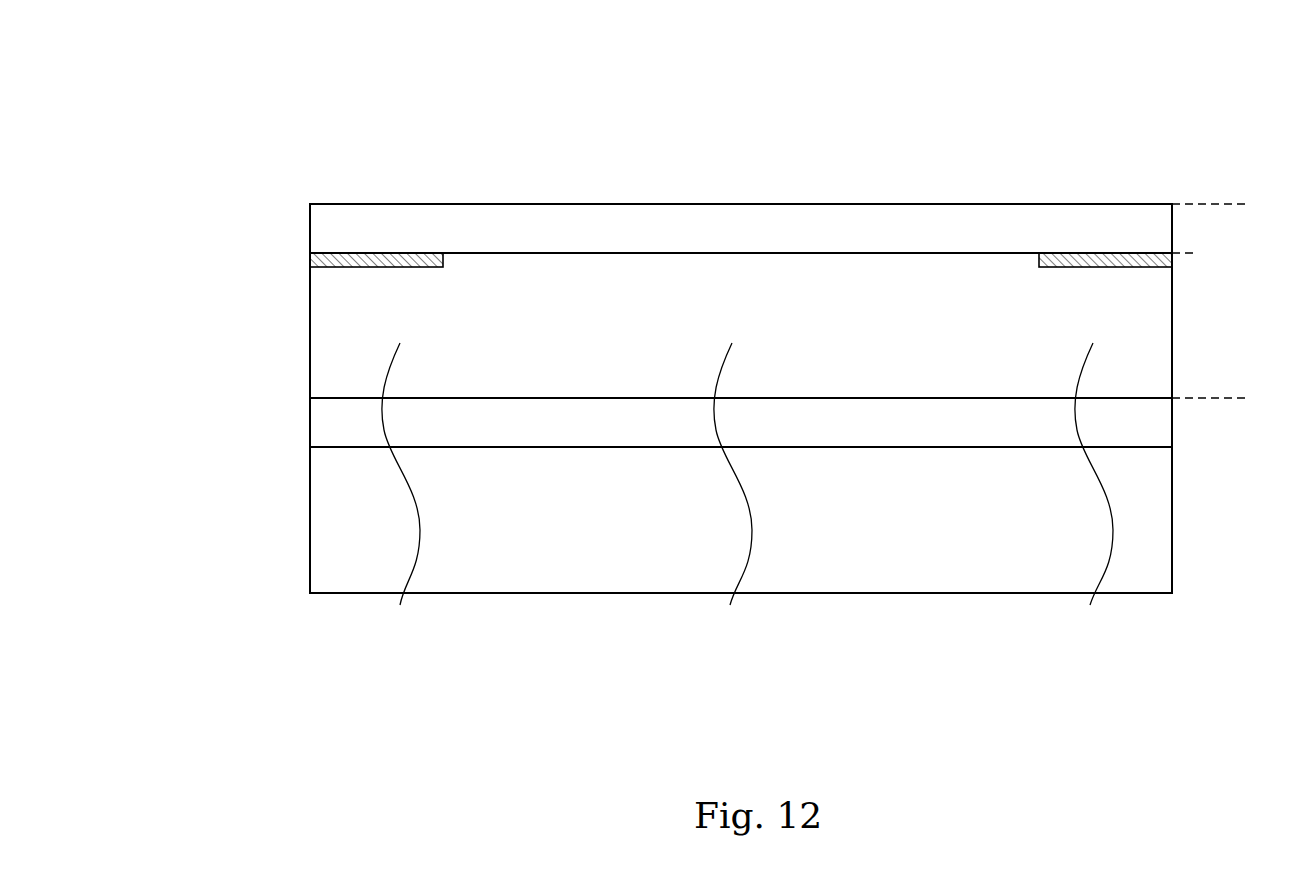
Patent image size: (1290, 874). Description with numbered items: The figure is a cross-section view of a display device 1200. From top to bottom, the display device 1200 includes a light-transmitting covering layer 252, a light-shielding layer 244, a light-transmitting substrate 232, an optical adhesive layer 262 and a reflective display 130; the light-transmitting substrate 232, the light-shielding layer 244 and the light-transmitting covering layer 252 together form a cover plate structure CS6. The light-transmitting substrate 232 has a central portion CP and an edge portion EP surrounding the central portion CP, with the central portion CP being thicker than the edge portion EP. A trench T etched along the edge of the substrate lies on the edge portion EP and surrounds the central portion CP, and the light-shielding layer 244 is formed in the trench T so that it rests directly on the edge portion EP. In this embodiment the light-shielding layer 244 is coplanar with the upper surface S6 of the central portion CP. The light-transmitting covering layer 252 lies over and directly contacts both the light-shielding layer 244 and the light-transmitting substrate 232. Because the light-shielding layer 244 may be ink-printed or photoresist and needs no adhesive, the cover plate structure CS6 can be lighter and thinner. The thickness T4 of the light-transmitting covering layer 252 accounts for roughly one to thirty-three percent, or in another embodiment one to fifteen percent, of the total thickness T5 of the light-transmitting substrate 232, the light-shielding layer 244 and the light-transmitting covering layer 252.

The display device 1200 is at (247, 52).
The light-transmitting covering layer 252 is at (316, 221).
The light-shielding layer 244 is at (314, 261).
The light-transmitting substrate 232 is at (1118, 632).
The optical adhesive layer 262 is at (316, 422).
The reflective display 130 is at (316, 518).
The upper surface S6 is at (500, 254).
The trench T is at (411, 256).
The thickness T4 is at (1195, 204).
The total thickness T5 is at (1245, 204).
The edge portion EP is at (746, 490).
The central portion CP is at (732, 490).
The cover plate structure CS6 is at (135, 723).